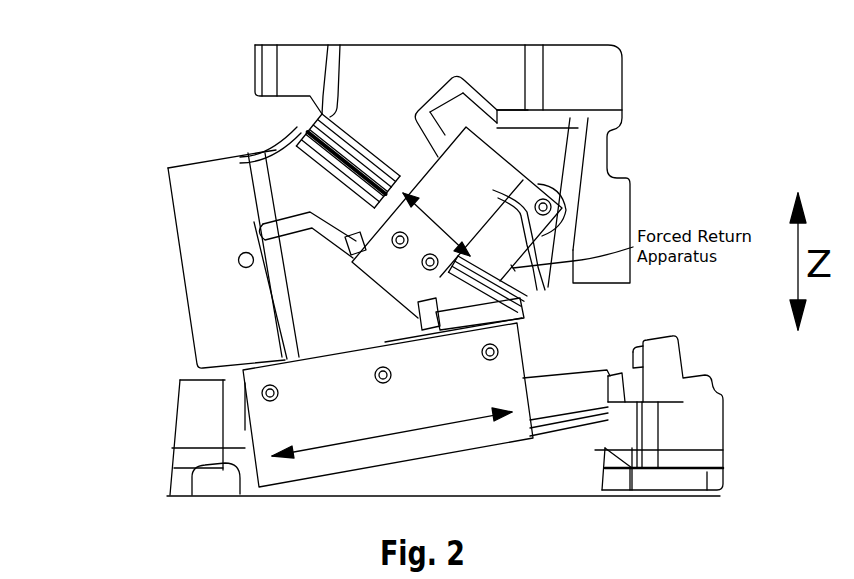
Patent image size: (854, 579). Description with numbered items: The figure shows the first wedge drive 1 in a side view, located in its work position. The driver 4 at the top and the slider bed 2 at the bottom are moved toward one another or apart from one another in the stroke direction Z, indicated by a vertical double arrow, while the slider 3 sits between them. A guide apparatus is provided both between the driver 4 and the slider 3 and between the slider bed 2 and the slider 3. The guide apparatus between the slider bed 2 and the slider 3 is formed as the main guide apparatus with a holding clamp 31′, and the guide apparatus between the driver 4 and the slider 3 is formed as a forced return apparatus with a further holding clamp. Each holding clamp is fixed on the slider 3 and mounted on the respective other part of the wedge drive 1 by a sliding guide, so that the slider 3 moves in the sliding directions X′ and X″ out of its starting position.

The first wedge drive 1 is at (74, 29).
The slider bed 2 is at (716, 428).
The slider 3 is at (205, 268).
The driver 4 is at (613, 68).
The holding clamp 31′ is at (513, 363).